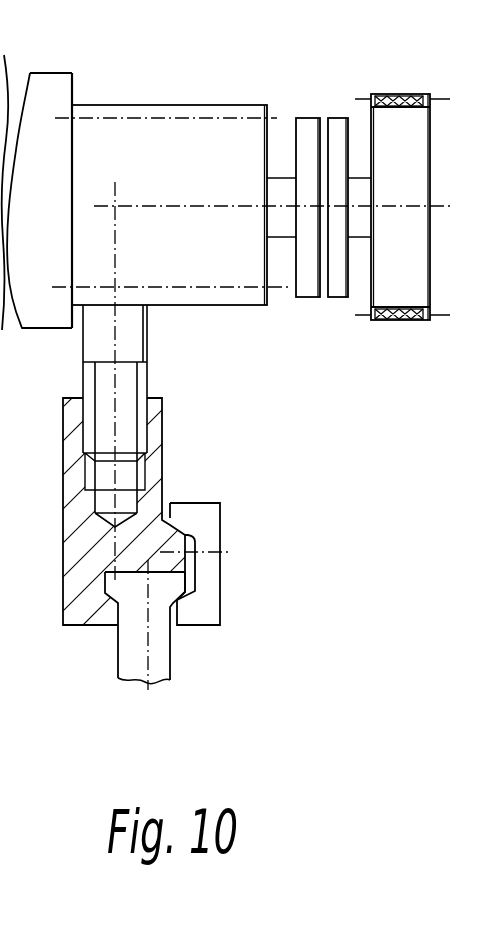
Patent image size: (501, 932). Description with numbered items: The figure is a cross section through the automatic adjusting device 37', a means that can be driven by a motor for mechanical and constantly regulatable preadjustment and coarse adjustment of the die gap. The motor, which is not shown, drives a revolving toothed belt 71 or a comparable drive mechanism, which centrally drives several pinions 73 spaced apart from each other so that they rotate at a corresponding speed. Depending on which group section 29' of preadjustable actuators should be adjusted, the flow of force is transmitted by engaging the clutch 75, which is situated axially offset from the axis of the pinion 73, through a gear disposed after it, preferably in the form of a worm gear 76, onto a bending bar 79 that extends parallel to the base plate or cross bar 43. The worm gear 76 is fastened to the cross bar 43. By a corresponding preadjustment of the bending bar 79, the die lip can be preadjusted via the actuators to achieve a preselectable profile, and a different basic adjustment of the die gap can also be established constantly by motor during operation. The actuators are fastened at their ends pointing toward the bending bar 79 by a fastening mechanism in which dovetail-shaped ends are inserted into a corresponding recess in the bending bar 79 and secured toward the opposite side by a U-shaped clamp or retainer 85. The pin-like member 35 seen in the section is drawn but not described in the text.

The cross bar 43 is at (48, 87).
The worm gear 76 is at (115, 135).
The automatic adjusting device 37' is at (297, 120).
The clutch 75 is at (326, 100).
The toothed belt 71 is at (402, 93).
The pinion 73 is at (383, 288).
The pin 35 is at (130, 387).
The bending bar 79 is at (157, 473).
The retainer 85 is at (214, 515).
The group section 29' is at (92, 565).